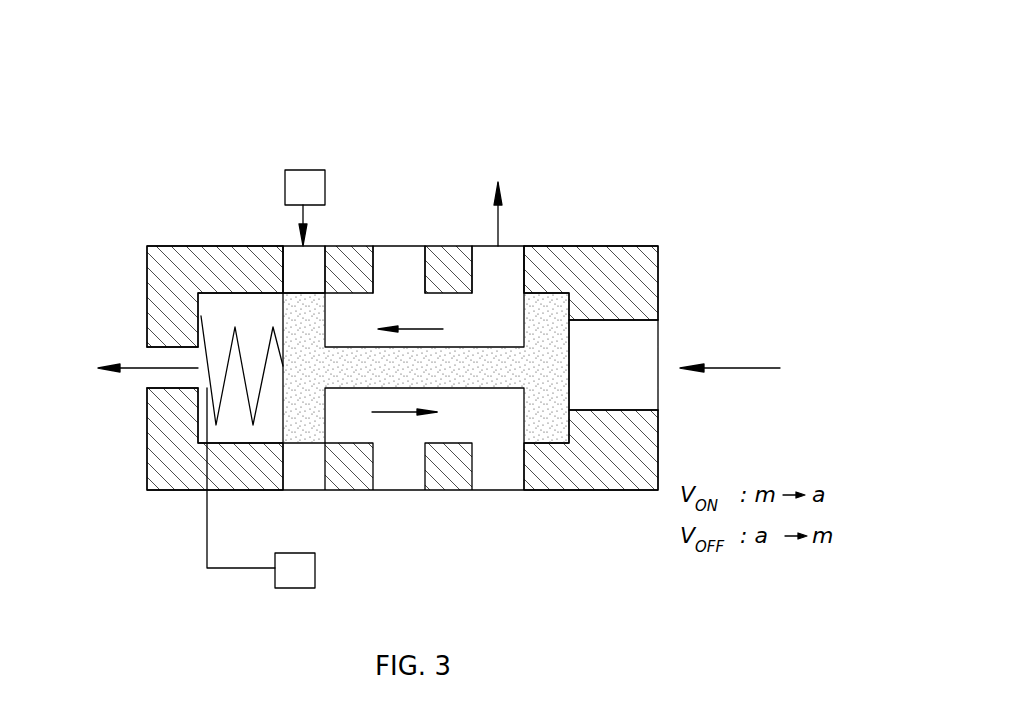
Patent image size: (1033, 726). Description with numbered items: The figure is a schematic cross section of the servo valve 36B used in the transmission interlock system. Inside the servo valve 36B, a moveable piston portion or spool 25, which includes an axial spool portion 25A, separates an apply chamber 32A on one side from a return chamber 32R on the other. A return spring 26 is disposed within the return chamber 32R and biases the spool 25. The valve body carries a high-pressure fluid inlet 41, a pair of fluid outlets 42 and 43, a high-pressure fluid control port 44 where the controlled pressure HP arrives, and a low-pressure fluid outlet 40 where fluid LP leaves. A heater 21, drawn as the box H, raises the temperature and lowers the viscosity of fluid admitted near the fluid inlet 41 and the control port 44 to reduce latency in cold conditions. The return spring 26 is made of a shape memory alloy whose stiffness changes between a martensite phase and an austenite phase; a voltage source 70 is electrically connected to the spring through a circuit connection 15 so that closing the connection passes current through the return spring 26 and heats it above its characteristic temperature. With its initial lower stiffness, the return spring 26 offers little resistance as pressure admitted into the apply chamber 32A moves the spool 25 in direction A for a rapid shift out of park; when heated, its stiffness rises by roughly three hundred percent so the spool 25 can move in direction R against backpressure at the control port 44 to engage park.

The servo valve 36B is at (604, 140).
The heater 21 is at (285, 196).
The return chamber 32R is at (204, 312).
The apply chamber 32A is at (590, 340).
The HP fluid inlet 41 is at (316, 246).
The fluid outlet 42 is at (413, 246).
The fluid outlet 43 is at (522, 268).
The HP fluid control port 44 is at (612, 320).
The LP fluid outlet 40 is at (171, 386).
The return spring 26 is at (248, 405).
The circuit connection 15 is at (205, 516).
The voltage source 70 is at (316, 566).
The spool 25 is at (543, 419).
The axial spool portion 25A is at (490, 363).